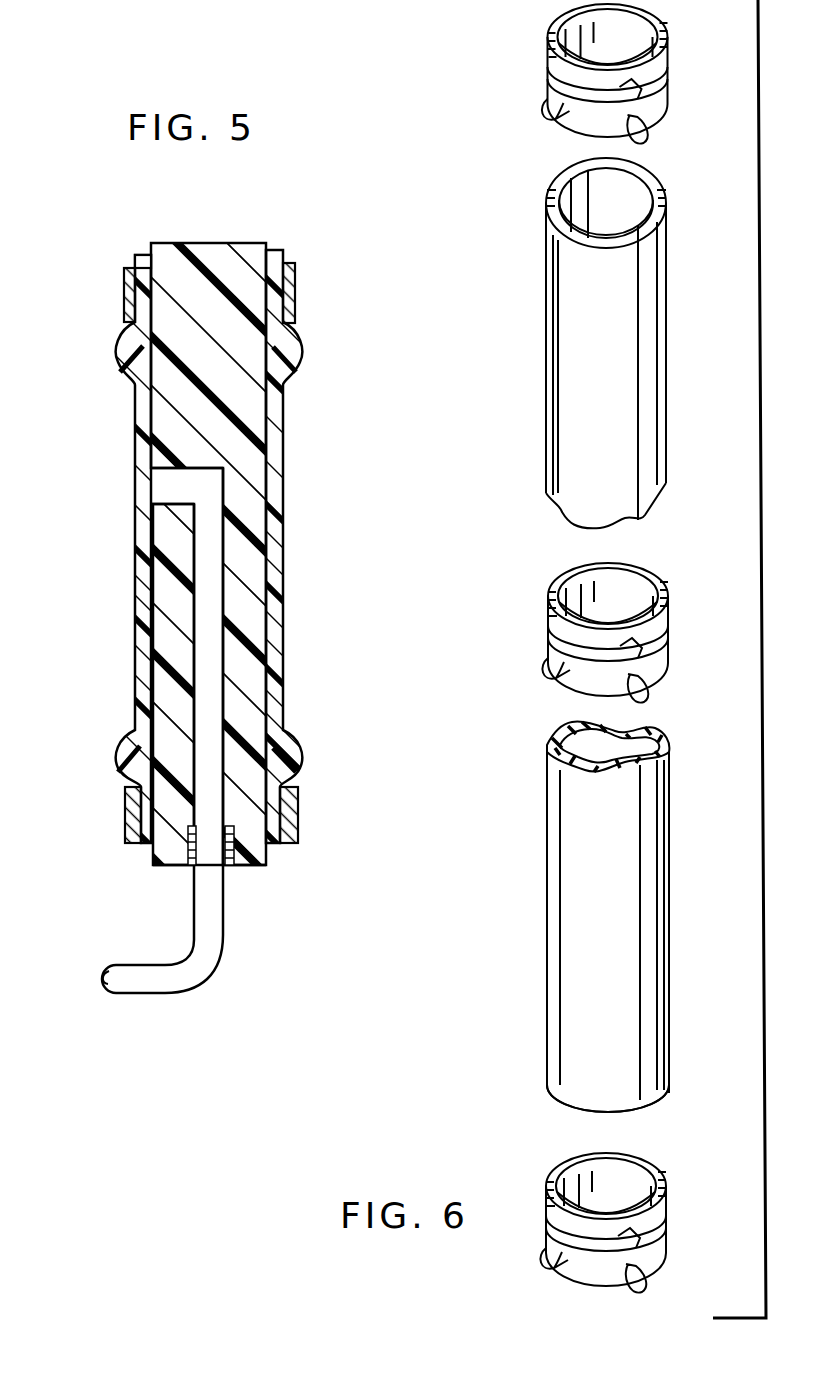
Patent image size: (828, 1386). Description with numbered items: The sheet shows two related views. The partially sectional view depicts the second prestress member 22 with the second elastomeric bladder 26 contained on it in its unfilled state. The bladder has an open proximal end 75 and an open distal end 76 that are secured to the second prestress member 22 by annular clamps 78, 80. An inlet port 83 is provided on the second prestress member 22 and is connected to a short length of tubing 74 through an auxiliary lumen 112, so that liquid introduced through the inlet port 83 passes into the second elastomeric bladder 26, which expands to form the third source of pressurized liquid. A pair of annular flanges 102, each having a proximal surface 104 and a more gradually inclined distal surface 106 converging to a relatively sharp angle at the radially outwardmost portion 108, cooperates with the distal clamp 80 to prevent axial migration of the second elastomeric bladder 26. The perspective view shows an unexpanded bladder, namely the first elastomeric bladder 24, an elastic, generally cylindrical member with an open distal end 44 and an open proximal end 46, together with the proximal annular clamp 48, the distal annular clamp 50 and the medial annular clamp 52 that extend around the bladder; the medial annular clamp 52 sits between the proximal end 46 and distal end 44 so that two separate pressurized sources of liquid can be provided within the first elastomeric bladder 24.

In FIG. 5, the second prestress member 22 is at (248, 244).
In FIG. 5, the second elastomeric bladder 26 is at (286, 500).
In FIG. 5, the inlet port 83 is at (174, 490).
In FIG. 5, the auxiliary lumen 112 is at (207, 646).
In FIG. 5, the tubing 74 is at (185, 984).
In FIG. 5, the proximal end 75 is at (143, 257).
In FIG. 5, the distal end 76 is at (138, 846).
In FIG. 5, the annular clamp 78 is at (298, 296).
In FIG. 5, the distal clamp 80 is at (300, 818).
In FIG. 5, the annular flanges 102 is at (292, 350).
In FIG. 5, the proximal surface 104 is at (125, 328).
In FIG. 5, the distal surface 106 is at (130, 374).
In FIG. 5, the radially outwardmost portion 108 is at (126, 352).
In FIG. 6, the proximal annular clamp 48 is at (668, 70).
In FIG. 6, the open proximal end 46 is at (627, 200).
In FIG. 6, the medial annular clamp 52 is at (664, 636).
In FIG. 6, the first elastomeric bladder 24 is at (655, 850).
In FIG. 6, the open distal end 44 is at (643, 1096).
In FIG. 6, the distal annular clamp 50 is at (666, 1238).